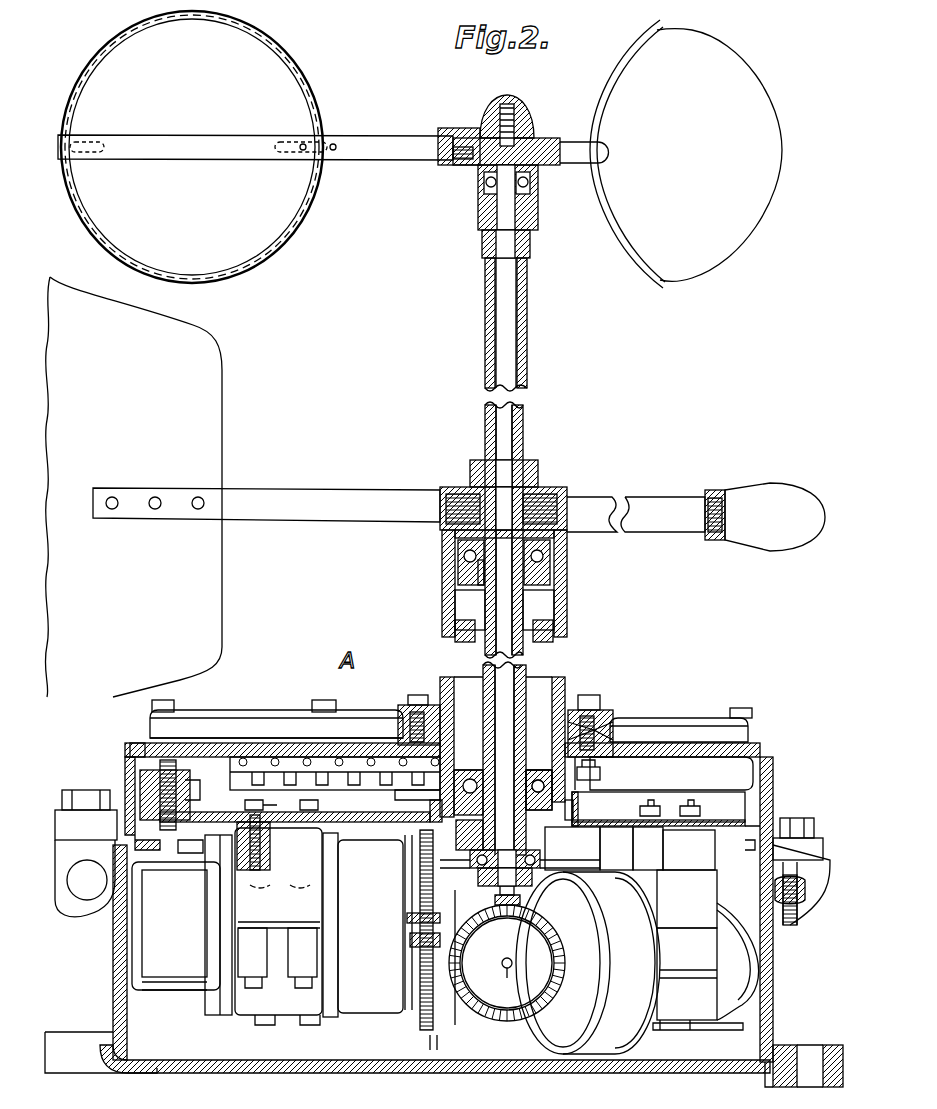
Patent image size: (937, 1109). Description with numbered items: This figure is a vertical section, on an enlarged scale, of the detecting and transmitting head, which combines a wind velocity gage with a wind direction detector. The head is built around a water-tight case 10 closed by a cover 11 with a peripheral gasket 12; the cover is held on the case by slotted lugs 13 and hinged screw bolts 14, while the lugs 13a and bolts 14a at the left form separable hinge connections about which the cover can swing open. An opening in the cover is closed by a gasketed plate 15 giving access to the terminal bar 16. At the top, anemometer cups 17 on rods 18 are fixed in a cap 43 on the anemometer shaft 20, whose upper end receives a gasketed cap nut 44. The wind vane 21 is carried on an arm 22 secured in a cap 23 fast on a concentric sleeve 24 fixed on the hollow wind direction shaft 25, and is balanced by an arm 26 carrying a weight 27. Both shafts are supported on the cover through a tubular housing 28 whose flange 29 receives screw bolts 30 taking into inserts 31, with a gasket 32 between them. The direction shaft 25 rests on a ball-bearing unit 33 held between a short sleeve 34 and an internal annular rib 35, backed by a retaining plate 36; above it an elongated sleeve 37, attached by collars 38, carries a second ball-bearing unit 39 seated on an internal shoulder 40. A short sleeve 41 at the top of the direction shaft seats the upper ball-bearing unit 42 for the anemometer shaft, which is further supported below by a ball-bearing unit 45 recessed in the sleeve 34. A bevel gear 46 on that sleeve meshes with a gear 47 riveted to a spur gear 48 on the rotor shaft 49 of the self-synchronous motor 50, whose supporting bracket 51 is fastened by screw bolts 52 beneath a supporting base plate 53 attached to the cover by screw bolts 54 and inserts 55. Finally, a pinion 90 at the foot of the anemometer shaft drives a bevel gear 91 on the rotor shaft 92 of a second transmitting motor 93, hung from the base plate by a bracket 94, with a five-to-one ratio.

The water-tight case 10 is at (774, 980).
The cover 11 is at (770, 776).
The peripheral gasket 12 is at (110, 835).
The slotted lugs 13 is at (812, 842).
The lugs 13a is at (85, 878).
The hinged screw bolts 14 is at (796, 820).
The bolts 14a is at (70, 792).
The gasketed plate 15 is at (672, 730).
The terminal bar 16 is at (292, 740).
The anemometer cups 17 is at (305, 90).
The rods 18 is at (376, 140).
The anemometer shaft 20 is at (515, 322).
The wind vane 21 is at (212, 384).
The arm 22 is at (324, 494).
The cap 23 is at (540, 488).
The concentric sleeve 24 is at (536, 462).
The wind direction shaft 25 is at (528, 300).
The arm 26 is at (660, 500).
The weight 27 is at (758, 488).
The tubular housing 28 is at (556, 620).
The flange 29 is at (598, 726).
The screw bolts 30 is at (584, 700).
The inserts 31 is at (600, 736).
The gasket 32 is at (404, 722).
The ball-bearing unit 33 is at (540, 772).
The short sleeve 34 is at (576, 812).
The internal annular rib 35 is at (600, 774).
The retaining plate 36 is at (428, 814).
The elongated sleeve 37 is at (490, 646).
The collars 38 is at (478, 582).
The ball-bearing unit 39 is at (460, 556).
The internal shoulder 40 is at (560, 590).
The short sleeve 41 is at (532, 245).
The ball-bearing unit 42 is at (480, 185).
The cap 43 is at (540, 165).
The cap nut 44 is at (525, 110).
The ball-bearing unit 45 is at (532, 858).
The bevel gear 46 is at (548, 868).
The gear 47 is at (456, 1000).
The spur gear 48 is at (431, 1047).
The rotor shaft 49 is at (412, 932).
The motor 50 is at (380, 1000).
The supporting bracket 51 is at (262, 1000).
The screw bolts 52 is at (256, 812).
The supporting base plate 53 is at (322, 812).
The screw bolts 54 is at (150, 780).
The inserts 55 is at (140, 760).
The pinion 90 is at (522, 900).
The bevel gear 91 is at (486, 1024).
The rotor shaft 92 is at (509, 980).
The transmitting motor 93 is at (588, 963).
The bracket 94 is at (700, 896).